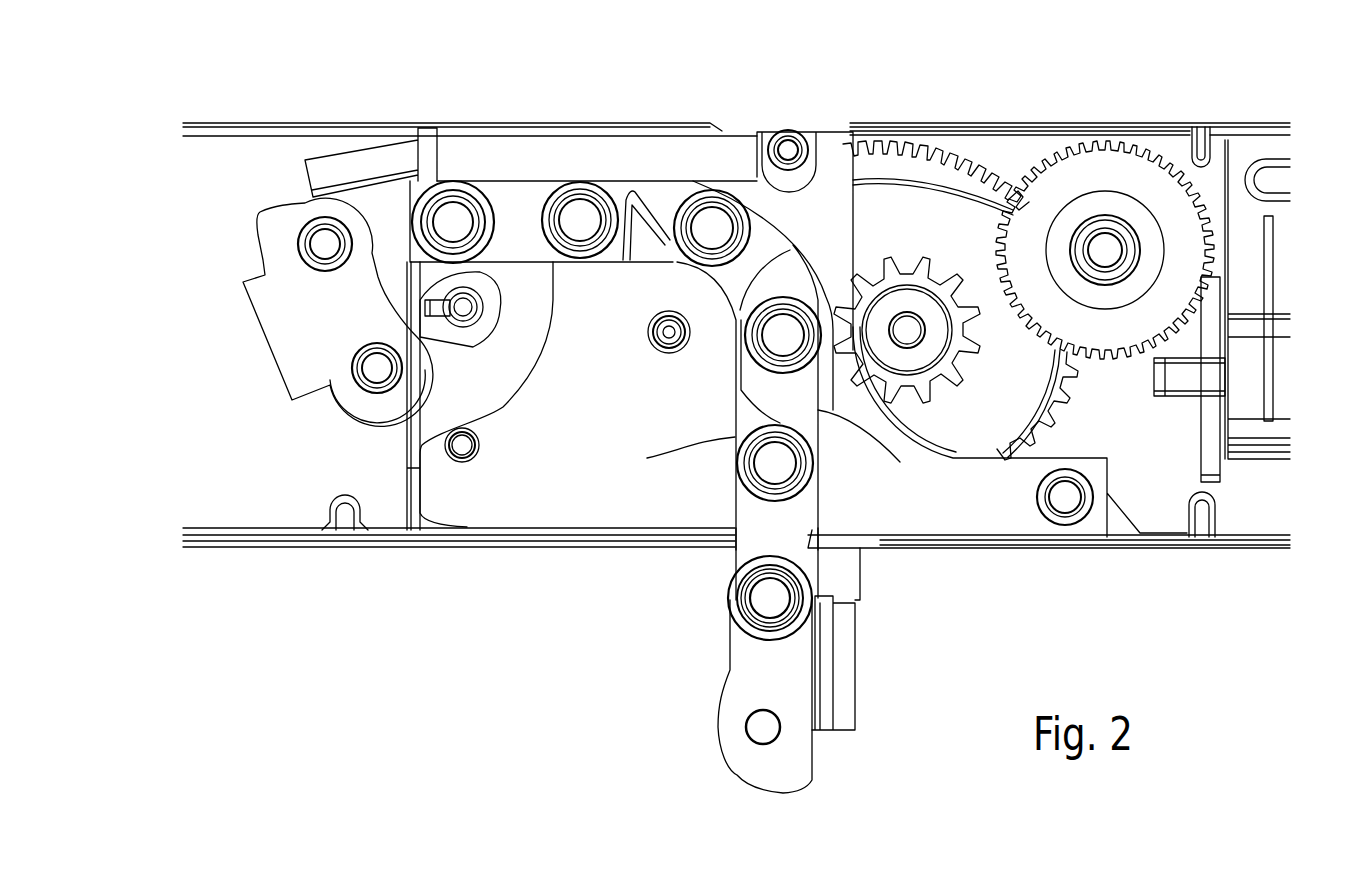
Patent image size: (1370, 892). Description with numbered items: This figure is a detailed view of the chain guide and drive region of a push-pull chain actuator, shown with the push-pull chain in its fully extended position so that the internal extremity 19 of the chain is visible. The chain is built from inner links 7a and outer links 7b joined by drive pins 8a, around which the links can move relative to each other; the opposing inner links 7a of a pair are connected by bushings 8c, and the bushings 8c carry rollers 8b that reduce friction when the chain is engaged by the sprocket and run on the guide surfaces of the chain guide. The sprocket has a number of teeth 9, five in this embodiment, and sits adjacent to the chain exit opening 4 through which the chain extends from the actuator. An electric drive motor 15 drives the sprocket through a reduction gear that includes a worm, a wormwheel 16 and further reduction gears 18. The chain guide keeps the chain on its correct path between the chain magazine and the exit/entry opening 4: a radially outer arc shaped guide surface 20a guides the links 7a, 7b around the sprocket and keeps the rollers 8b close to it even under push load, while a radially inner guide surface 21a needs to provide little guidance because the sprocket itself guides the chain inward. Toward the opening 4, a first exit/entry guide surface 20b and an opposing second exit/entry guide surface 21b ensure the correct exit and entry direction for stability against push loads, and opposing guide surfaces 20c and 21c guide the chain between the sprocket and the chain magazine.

The chain exit opening 4 is at (730, 549).
The inner links 7a is at (762, 668).
The outer links 7b is at (843, 565).
The drive pins 8a is at (580, 220).
The rollers 8b is at (740, 606).
The bushings 8c is at (455, 212).
The teeth 9 is at (643, 217).
The electric drive motor 15 is at (1274, 213).
The wormwheel 16 is at (1088, 185).
The reduction gears 18 is at (905, 153).
The internal extremity 19 is at (310, 333).
The radially outer arc shaped guide surface 20a is at (847, 135).
The first exit/entry guide surface 20b is at (818, 412).
The guide surface 20c is at (525, 181).
The radially inner guide surface 21a is at (735, 290).
The second exit/entry guide surface 21b is at (647, 458).
The guide surface 21c is at (445, 420).